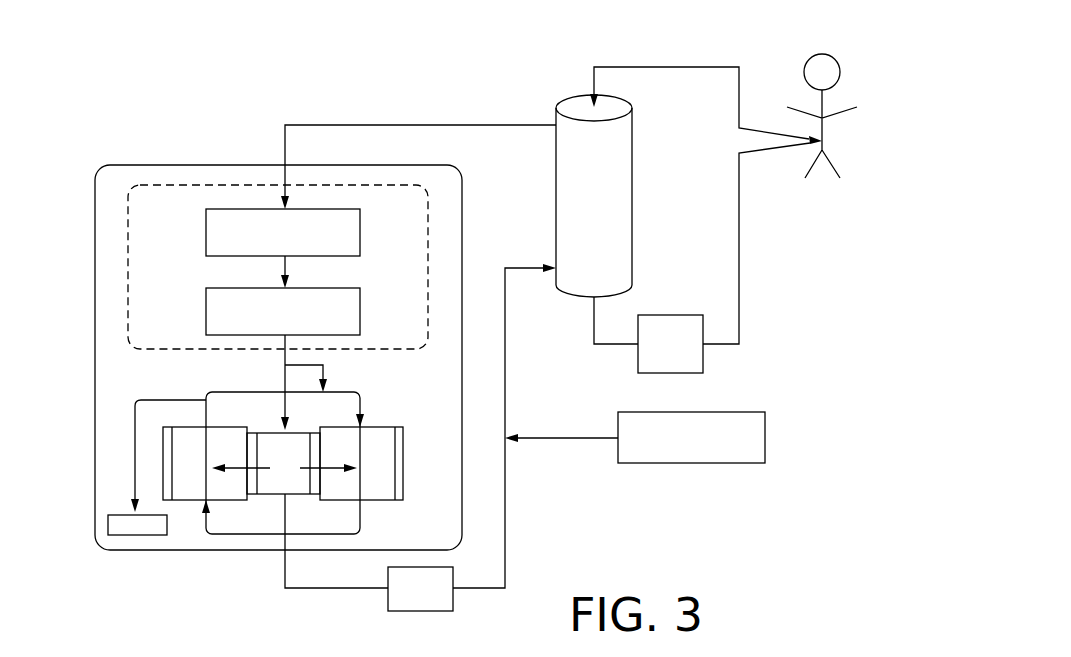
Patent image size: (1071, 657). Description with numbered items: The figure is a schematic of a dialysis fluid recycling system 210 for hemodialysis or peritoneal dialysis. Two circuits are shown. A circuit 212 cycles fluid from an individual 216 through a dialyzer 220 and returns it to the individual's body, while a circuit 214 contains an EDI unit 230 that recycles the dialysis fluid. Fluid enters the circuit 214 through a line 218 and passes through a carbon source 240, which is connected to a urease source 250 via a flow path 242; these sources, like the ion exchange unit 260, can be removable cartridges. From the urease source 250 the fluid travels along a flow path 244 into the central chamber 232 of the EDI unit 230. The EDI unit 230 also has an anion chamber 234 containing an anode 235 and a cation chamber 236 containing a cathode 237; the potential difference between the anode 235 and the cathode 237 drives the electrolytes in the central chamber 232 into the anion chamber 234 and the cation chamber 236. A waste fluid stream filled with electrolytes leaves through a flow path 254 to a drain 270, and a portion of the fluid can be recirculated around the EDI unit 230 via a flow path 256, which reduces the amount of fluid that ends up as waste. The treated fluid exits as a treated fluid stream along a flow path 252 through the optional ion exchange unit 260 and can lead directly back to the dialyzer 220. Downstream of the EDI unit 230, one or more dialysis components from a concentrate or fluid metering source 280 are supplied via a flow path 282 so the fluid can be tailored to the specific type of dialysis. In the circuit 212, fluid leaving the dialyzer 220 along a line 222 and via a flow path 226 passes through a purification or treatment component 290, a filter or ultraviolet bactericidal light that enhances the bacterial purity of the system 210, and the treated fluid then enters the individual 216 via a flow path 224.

The dialysis fluid recycling system 210 is at (241, 90).
The circuit 212 is at (710, 47).
The circuit 214 is at (480, 217).
The individual 216 is at (835, 58).
The inlet line 218 is at (343, 124).
The dialyzer 220 is at (632, 172).
The outlet line 222 is at (663, 67).
The flow path 224 is at (739, 258).
The flow path 226 is at (614, 344).
The EDI unit 230 is at (148, 478).
The central chamber 232 is at (268, 487).
The anion chamber 234 is at (185, 437).
The anode 235 is at (167, 457).
The cation chamber 236 is at (388, 493).
The cathode 237 is at (400, 452).
The carbon source 240 is at (206, 240).
The flow path 242 is at (282, 262).
The flow path 244 is at (283, 368).
The urease source 250 is at (206, 302).
The flow path 252 is at (316, 590).
The flow path 254 is at (135, 428).
The flow path 256 is at (354, 391).
The ion exchange unit 260 is at (388, 598).
The drain 270 is at (115, 531).
The concentrate or fluid metering source 280 is at (670, 464).
The flow path 282 is at (560, 440).
The purification or treatment component 290 is at (703, 357).